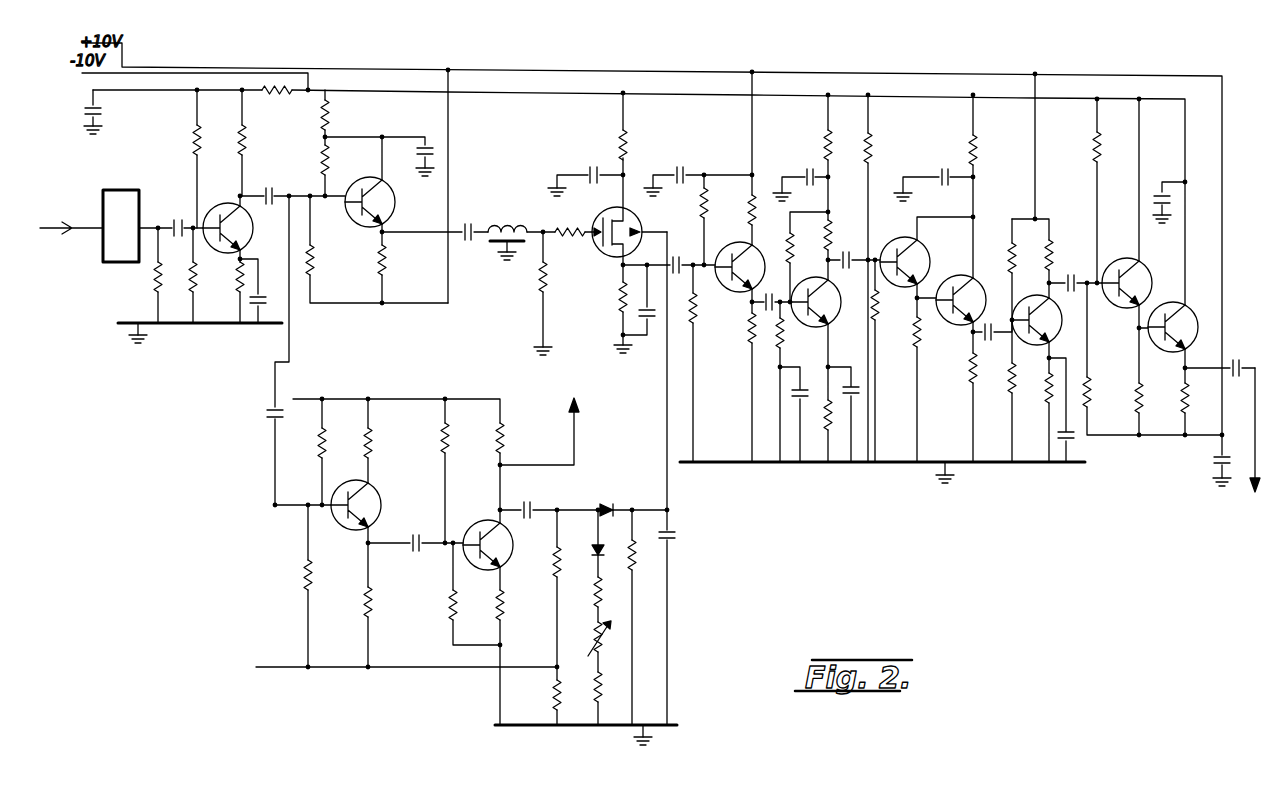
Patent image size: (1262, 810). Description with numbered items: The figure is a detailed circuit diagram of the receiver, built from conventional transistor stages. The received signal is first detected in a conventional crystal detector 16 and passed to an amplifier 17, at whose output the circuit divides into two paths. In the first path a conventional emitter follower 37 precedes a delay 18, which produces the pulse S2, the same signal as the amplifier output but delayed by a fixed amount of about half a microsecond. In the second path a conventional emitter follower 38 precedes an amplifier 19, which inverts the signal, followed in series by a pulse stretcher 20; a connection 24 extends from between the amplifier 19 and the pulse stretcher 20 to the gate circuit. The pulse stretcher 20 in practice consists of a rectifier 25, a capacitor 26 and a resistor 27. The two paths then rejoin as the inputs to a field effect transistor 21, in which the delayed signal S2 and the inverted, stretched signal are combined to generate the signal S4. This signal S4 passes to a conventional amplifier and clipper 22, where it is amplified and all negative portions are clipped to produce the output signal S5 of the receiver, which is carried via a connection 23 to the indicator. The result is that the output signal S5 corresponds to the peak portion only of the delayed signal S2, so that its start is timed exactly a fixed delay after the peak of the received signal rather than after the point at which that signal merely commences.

The detector 16 is at (112, 199).
The amplifier 17 is at (180, 138).
The emitter follower 37 is at (432, 127).
The delayed signal S2 is at (537, 215).
The delay 18 is at (516, 220).
The field effect transistor 21 is at (630, 206).
The combined signal S4 is at (667, 390).
The connection 24 is at (573, 426).
The pulse stretcher 20 is at (584, 591).
The rectifier 25 is at (608, 501).
The capacitor 26 is at (672, 536).
The resistor 27 is at (636, 560).
The emitter follower 38 is at (260, 505).
The amplifier 19 is at (455, 677).
The amplifier and clipper 22 is at (987, 510).
The connection 23 is at (1255, 431).
The output signal S5 is at (1245, 470).